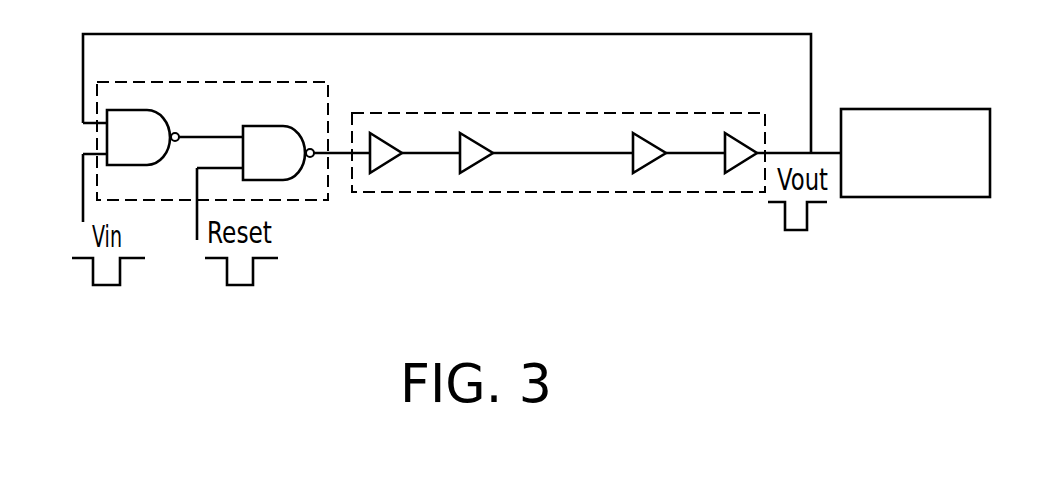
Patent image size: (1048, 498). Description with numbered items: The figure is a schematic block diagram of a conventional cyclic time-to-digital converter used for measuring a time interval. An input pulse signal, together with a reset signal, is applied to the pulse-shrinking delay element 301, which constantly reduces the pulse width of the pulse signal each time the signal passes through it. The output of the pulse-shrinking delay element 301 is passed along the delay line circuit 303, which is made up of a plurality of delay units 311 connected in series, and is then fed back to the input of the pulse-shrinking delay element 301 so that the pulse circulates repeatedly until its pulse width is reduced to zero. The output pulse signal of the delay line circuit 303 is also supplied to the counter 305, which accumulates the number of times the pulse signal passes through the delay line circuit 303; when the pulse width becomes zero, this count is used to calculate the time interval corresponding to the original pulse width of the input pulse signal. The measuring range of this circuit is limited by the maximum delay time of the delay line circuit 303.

The pulse-shrinking delay element 301 is at (315, 202).
The delay line circuit 303 is at (558, 204).
The counter 305 is at (898, 108).
The delay unit 311 is at (385, 166).